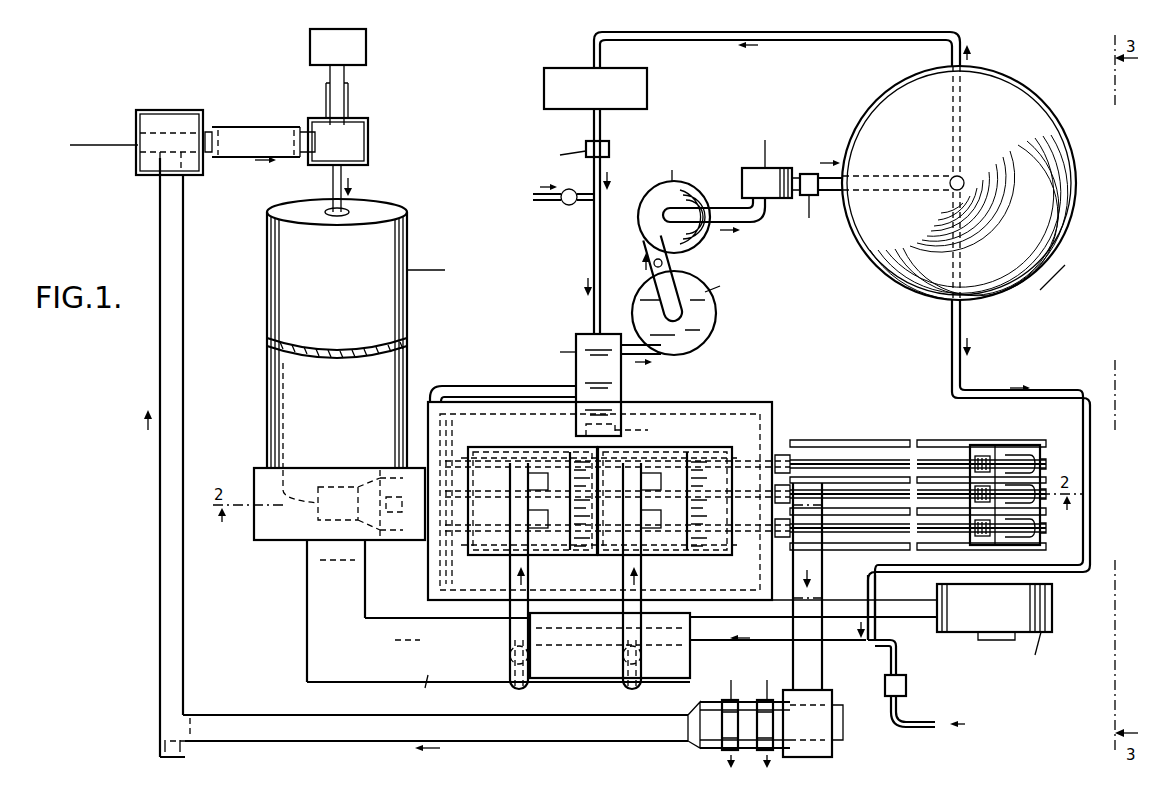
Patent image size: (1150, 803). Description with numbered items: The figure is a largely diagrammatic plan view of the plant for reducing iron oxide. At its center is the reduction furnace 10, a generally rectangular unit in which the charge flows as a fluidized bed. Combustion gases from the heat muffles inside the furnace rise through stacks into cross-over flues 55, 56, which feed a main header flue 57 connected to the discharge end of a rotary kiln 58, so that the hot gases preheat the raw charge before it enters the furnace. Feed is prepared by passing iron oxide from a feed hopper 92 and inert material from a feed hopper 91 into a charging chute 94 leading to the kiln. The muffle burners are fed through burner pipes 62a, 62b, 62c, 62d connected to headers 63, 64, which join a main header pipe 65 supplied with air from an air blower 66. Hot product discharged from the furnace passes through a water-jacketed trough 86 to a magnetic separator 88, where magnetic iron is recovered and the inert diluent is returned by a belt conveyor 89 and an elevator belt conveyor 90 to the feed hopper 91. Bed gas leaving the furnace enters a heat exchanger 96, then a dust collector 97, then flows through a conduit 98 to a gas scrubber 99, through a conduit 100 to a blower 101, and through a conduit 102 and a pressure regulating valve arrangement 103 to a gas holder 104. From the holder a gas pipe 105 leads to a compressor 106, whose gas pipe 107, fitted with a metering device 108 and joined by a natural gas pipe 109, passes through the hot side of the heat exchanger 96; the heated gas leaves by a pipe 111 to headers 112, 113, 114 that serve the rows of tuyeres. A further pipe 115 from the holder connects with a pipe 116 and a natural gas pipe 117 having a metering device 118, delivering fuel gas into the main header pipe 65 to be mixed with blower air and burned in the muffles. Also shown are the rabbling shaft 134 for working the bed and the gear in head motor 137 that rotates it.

The reduction furnace 10 is at (366, 576).
The cross-over flue 55 is at (570, 587).
The cross-over flue 56 is at (684, 582).
The main header flue 57 is at (310, 655).
The rotary kiln 58 is at (283, 395).
The burner pipe 62a is at (538, 473).
The burner pipe 62b is at (542, 528).
The burner pipe 62c is at (655, 480).
The burner pipe 62d is at (656, 522).
The header 63 is at (508, 632).
The header 64 is at (643, 632).
The main header pipe 65 is at (775, 612).
The air blower 66 is at (1052, 604).
The water-jacketed trough 86 is at (822, 678).
The magnetic separator 88 is at (716, 712).
The belt conveyor 89 is at (286, 710).
The elevator belt conveyor 90 is at (160, 530).
The feed hopper 91 is at (142, 118).
The feed hopper 92 is at (366, 48).
The charging chute 94 is at (368, 140).
The heat exchanger 96 is at (576, 370).
The dust collector 97 is at (715, 314).
The conduit 98 is at (672, 255).
The gas scrubber 99 is at (693, 195).
The conduit 100 is at (750, 222).
The blower 101 is at (742, 172).
The conduit 102 is at (845, 178).
The pressure regulating valve arrangement 103 is at (800, 168).
The gas holder 104 is at (1013, 95).
The gas pipe 105 is at (825, 40).
The compressor 106 is at (544, 87).
The gas pipe 107 is at (594, 255).
The metering device 108 is at (609, 146).
The pipe 109 is at (583, 206).
The pipe 111 is at (440, 568).
The header 112 is at (498, 512).
The header 113 is at (498, 480).
The header 114 is at (483, 455).
The pipe 115 is at (952, 356).
The pipe 116 is at (848, 640).
The pipe 117 is at (898, 656).
The metering device 118 is at (906, 685).
The rabbling shaft 134 is at (838, 464).
The gear in head motor 137 is at (1018, 456).